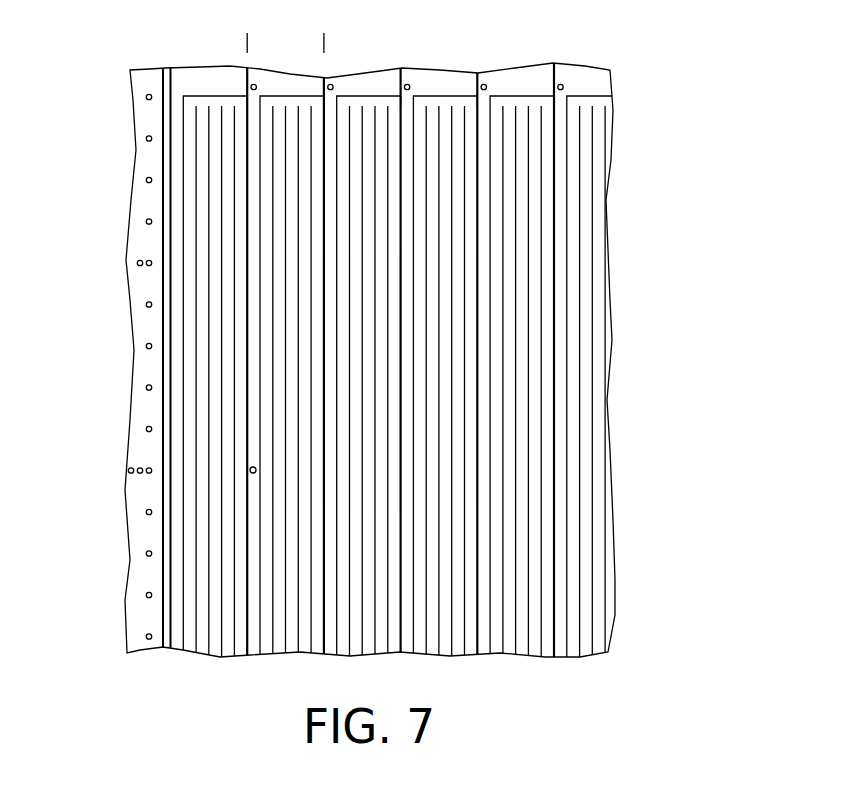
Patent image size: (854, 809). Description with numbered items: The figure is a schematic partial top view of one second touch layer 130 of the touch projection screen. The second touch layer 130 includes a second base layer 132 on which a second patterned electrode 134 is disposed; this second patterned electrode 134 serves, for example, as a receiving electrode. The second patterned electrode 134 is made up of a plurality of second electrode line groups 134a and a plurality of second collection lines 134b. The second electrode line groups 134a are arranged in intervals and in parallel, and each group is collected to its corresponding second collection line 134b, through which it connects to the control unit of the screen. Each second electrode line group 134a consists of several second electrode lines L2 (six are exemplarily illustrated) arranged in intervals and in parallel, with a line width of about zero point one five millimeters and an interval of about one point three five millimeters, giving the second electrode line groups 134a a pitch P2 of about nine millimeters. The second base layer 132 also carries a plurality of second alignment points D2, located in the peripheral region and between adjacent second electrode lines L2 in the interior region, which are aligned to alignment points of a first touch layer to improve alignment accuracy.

The second touch layer 130 is at (743, 638).
The second base layer 132 is at (143, 118).
The second patterned electrode 134 is at (339, 333).
The second electrode line group 134a is at (477, 88).
The second collection line 134b is at (499, 74).
The second alignment point D2 is at (146, 222).
The pitch of the second electrode line groups P2 is at (323, 43).
The second electrode line L2 is at (412, 138).